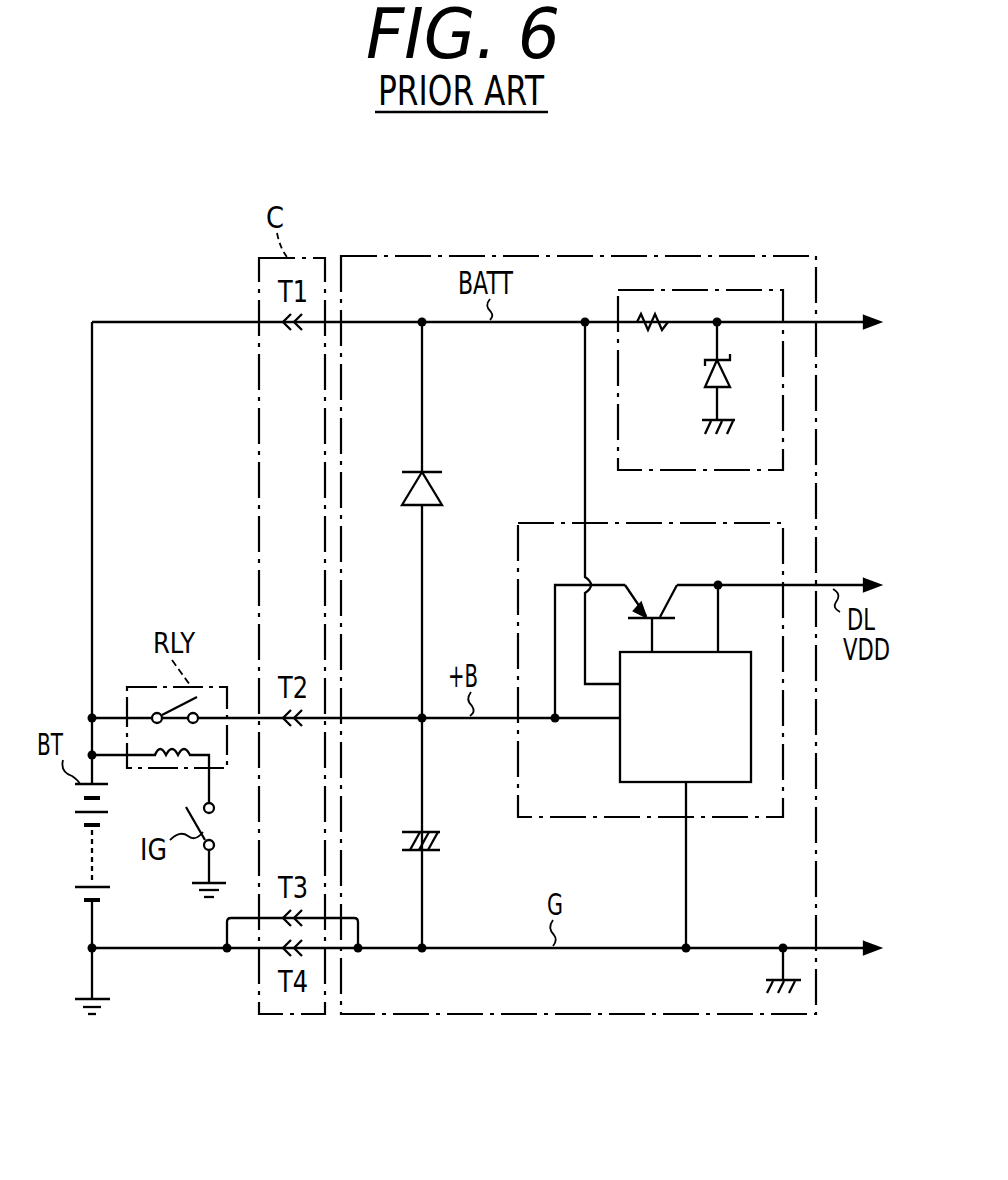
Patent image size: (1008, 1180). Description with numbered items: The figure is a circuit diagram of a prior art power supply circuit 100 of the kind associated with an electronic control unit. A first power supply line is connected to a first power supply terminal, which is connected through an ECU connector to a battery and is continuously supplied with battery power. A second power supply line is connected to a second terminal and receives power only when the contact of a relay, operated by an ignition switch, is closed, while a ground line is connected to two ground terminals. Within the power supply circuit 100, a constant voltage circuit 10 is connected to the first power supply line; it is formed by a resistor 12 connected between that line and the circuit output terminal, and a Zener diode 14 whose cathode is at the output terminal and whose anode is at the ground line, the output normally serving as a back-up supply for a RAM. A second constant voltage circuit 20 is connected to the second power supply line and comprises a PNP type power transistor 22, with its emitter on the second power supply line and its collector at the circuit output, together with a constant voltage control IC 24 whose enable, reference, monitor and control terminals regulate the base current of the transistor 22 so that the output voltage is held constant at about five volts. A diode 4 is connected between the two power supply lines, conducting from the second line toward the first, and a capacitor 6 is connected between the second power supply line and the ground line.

The power supply circuit 100 is at (750, 256).
The constant voltage circuit 10 is at (706, 470).
The resistor 12 is at (650, 330).
The Zener diode 14 is at (705, 375).
The constant voltage circuit 20 is at (708, 817).
The PNP type power transistor 22 is at (666, 602).
The constant voltage control IC 24 is at (620, 765).
The diode 4 is at (436, 491).
The capacitor 6 is at (438, 832).